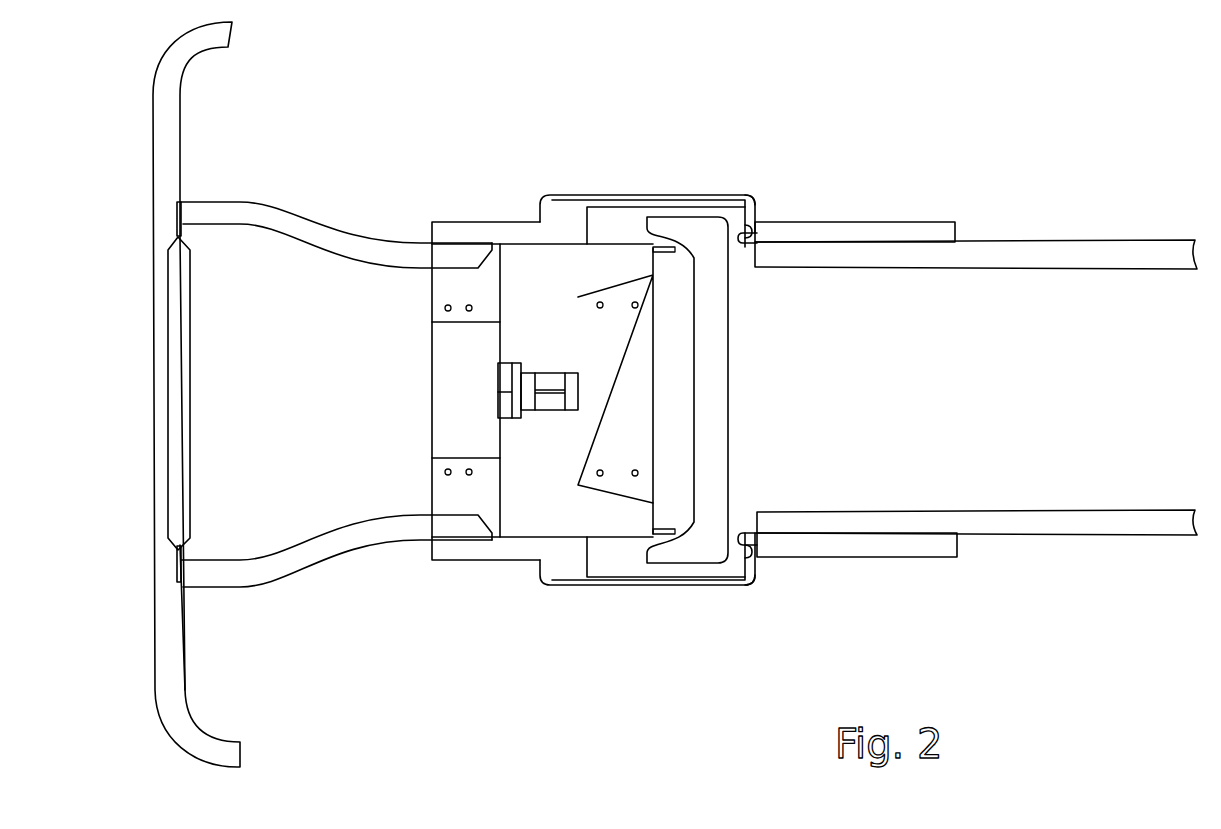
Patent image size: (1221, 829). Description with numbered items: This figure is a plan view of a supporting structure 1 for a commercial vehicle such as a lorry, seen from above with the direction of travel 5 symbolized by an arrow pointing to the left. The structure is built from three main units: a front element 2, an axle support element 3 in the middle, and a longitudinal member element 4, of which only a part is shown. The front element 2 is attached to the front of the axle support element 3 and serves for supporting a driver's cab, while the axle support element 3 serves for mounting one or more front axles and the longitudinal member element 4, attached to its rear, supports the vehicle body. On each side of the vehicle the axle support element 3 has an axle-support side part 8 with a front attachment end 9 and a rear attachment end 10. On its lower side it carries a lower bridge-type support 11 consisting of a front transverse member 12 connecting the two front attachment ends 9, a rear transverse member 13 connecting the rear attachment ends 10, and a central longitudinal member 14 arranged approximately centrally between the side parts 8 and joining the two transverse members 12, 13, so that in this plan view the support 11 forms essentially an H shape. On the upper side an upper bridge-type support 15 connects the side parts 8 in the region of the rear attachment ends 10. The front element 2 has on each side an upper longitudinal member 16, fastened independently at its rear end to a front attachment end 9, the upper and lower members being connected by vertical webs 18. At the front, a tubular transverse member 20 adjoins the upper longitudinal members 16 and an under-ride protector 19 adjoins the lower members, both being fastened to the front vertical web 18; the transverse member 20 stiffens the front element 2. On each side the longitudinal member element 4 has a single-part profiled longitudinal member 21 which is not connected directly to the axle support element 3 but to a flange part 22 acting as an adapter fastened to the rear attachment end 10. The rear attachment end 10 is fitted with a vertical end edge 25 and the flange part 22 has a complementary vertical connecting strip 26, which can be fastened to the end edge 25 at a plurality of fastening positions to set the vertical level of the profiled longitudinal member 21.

The supporting structure 1 is at (950, 118).
The front element 2 is at (345, 590).
The axle support element 3 is at (604, 626).
The longitudinal member element 4 is at (1086, 604).
The direction of travel 5 is at (112, 408).
The axle-support side part 8 is at (520, 236).
The front attachment end 9 is at (444, 236).
The rear attachment end 10 is at (752, 197).
The lower bridge-type support 11 is at (422, 397).
The front transverse member 12 is at (440, 347).
The rear transverse member 13 is at (606, 382).
The central longitudinal member 14 is at (548, 402).
The upper bridge-type support 15 is at (748, 392).
The upper longitudinal member 16 is at (320, 224).
The vertical web 18 is at (185, 233).
The under-ride protector 19 is at (165, 166).
The transverse member 20 is at (182, 412).
The profiled longitudinal member 21 is at (1077, 257).
The flange part 22 is at (900, 233).
The vertical end edge 25 is at (756, 214).
The vertical connecting strip 26 is at (739, 244).